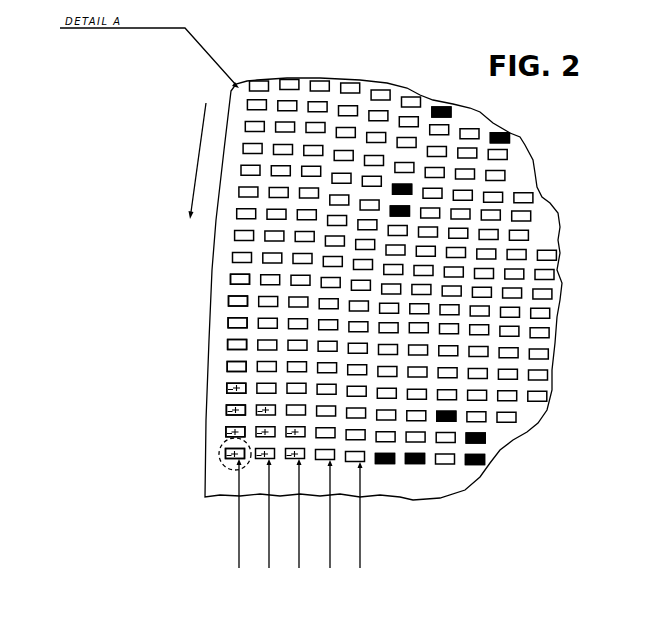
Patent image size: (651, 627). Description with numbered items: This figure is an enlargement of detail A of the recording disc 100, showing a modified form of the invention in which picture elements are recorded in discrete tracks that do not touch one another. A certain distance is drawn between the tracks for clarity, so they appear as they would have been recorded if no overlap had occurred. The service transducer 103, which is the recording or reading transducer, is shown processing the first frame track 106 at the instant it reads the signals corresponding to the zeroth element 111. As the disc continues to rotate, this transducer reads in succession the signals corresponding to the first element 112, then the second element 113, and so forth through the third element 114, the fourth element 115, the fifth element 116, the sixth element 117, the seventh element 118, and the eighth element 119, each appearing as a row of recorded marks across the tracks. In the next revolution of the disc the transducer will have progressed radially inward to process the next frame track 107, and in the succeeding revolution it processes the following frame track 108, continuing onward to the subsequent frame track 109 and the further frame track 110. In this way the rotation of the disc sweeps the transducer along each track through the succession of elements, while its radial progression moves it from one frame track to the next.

The disc 100 is at (224, 236).
The service transducer 103 is at (222, 462).
The track for frame 0 106 is at (233, 526).
The track for frame 1 107 is at (267, 532).
The track for frame 2 108 is at (297, 526).
The track for frame 3 109 is at (328, 533).
The track for frame 4 110 is at (359, 527).
The element 0 111 is at (234, 451).
The element 1 112 is at (235, 429).
The element 2 113 is at (236, 407).
The element 3 114 is at (236, 385).
The element 4 115 is at (236, 363).
The element 5 116 is at (237, 341).
The element 6 117 is at (238, 319).
The element 7 118 is at (238, 298).
The element 8 119 is at (240, 276).